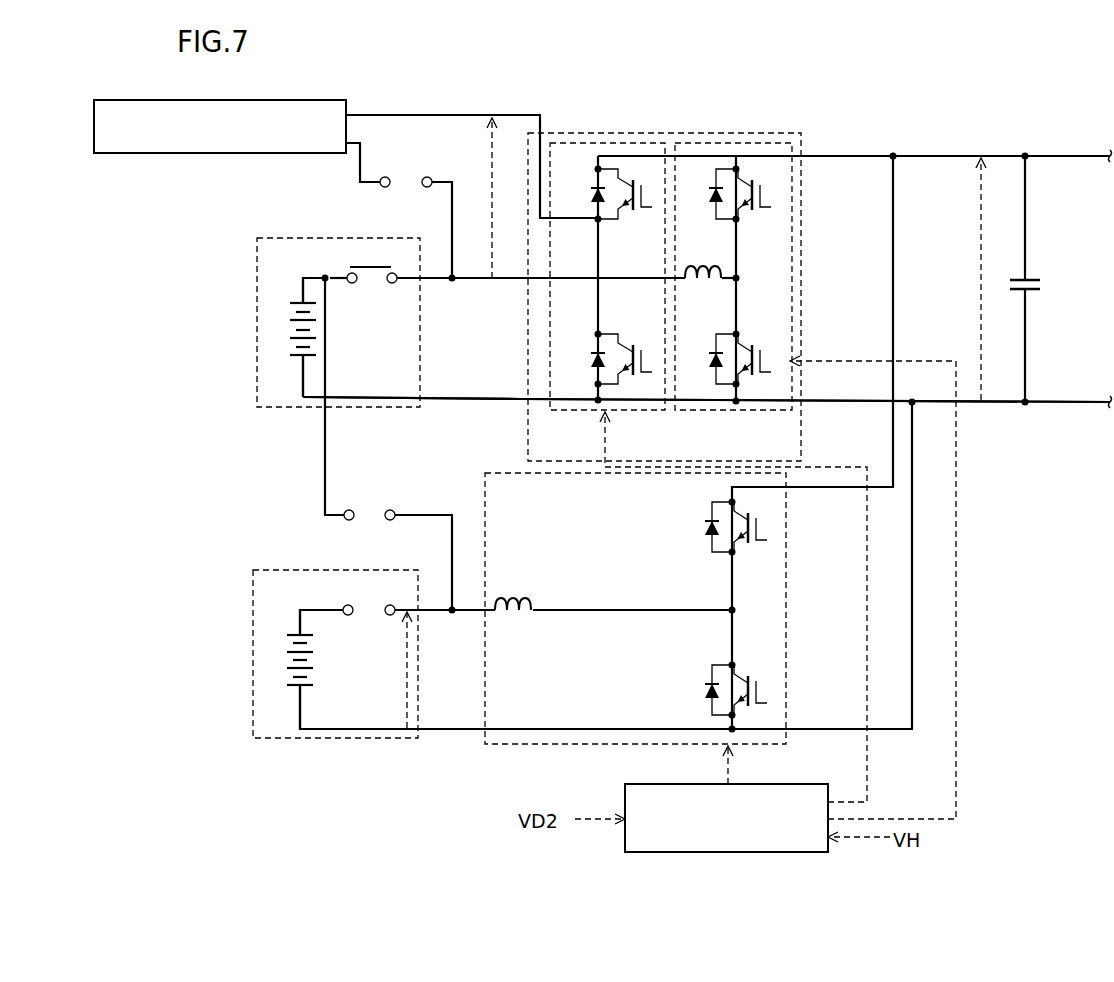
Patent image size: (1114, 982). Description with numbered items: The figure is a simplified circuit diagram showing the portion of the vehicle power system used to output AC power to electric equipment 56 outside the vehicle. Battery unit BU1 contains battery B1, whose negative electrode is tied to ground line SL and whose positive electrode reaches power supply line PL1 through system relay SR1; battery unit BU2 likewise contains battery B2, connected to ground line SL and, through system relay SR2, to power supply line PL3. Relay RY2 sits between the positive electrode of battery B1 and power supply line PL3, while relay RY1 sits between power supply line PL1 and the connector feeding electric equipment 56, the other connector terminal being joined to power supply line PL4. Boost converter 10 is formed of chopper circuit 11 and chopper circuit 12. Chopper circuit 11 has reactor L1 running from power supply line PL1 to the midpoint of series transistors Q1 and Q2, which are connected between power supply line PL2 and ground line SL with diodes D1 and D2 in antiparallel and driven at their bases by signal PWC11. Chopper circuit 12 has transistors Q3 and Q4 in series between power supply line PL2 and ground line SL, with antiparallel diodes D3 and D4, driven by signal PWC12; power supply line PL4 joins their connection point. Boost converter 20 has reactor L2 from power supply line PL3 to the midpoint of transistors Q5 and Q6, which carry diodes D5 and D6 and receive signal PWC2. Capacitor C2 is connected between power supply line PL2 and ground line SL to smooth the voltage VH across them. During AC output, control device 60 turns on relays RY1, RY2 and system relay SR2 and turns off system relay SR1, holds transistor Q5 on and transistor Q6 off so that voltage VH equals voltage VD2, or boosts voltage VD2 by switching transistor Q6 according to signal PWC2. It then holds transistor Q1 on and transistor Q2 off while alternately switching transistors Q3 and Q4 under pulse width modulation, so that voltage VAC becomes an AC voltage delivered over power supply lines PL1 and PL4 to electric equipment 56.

The electric equipment 56 is at (280, 100).
The boost converter 10 is at (755, 133).
The chopper circuit 11 is at (692, 412).
The chopper circuit 12 is at (568, 412).
The boost converter 20 is at (788, 610).
The control device 60 is at (728, 856).
The power supply line PL4 is at (425, 113).
The voltage VAC is at (468, 198).
The relay RY1 is at (405, 190).
The battery unit BU1 is at (286, 238).
The battery B1 is at (300, 300).
The system relay SR1 is at (371, 286).
The power supply line PL1 is at (502, 288).
The ground line SL is at (452, 402).
The diode D3 is at (594, 204).
The npn-type transistor Q3 is at (644, 218).
The diode D1 is at (712, 204).
The npn-type transistor Q1 is at (760, 218).
The reactor L1 is at (692, 279).
The diode D4 is at (591, 356).
The npn-type transistor Q4 is at (643, 344).
The diode D2 is at (710, 356).
The npn-type transistor Q2 is at (762, 344).
The power supply line PL2 is at (948, 154).
The voltage VH is at (964, 279).
The capacitor C2 is at (1029, 277).
The diode D5 is at (709, 538).
The npn-type transistor Q5 is at (759, 547).
The diode D6 is at (706, 688).
The npn-type transistor Q6 is at (760, 674).
The reactor L2 is at (498, 609).
The power supply line PL3 is at (466, 614).
The relay RY2 is at (372, 522).
The battery unit BU2 is at (281, 568).
The battery B2 is at (295, 630).
The system relay SR2 is at (370, 617).
The voltage VD2 is at (386, 670).
The signal PWC2 is at (756, 765).
The signal PWC12 is at (770, 607).
The signal PWC11 is at (911, 587).